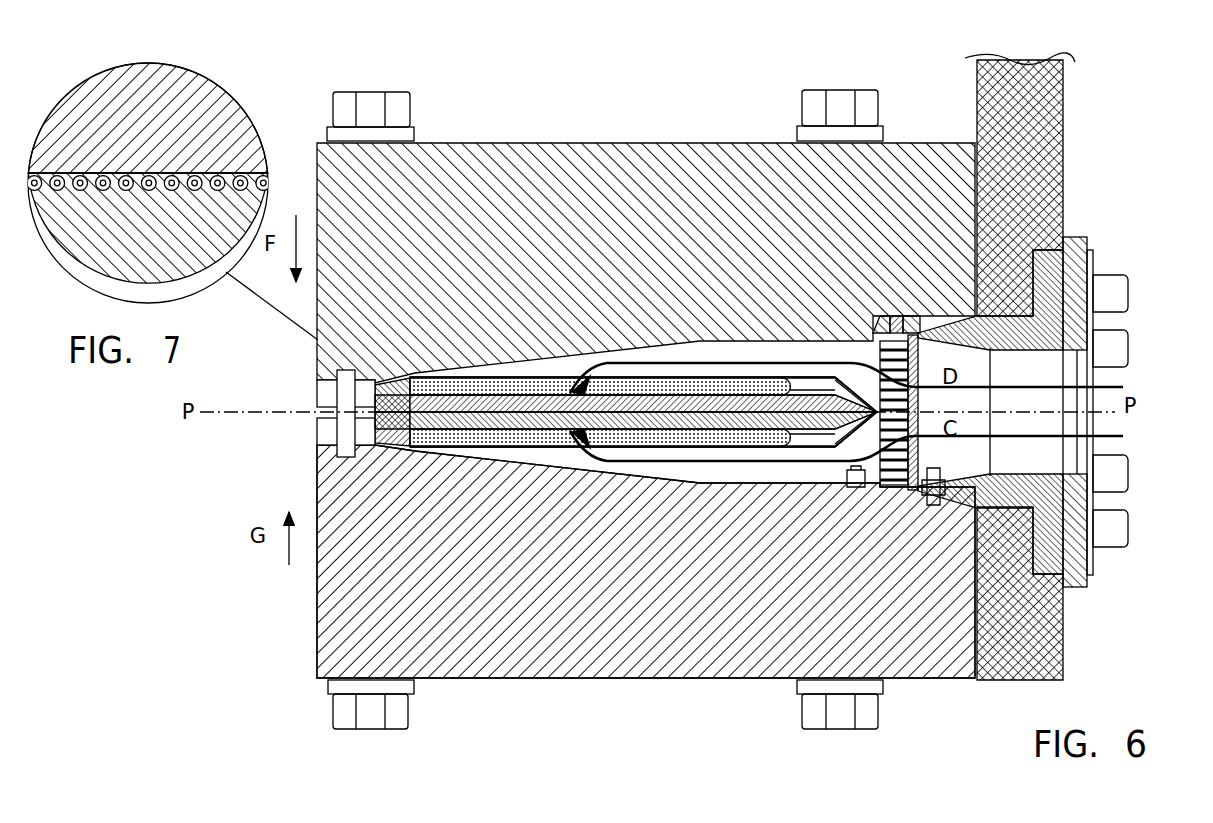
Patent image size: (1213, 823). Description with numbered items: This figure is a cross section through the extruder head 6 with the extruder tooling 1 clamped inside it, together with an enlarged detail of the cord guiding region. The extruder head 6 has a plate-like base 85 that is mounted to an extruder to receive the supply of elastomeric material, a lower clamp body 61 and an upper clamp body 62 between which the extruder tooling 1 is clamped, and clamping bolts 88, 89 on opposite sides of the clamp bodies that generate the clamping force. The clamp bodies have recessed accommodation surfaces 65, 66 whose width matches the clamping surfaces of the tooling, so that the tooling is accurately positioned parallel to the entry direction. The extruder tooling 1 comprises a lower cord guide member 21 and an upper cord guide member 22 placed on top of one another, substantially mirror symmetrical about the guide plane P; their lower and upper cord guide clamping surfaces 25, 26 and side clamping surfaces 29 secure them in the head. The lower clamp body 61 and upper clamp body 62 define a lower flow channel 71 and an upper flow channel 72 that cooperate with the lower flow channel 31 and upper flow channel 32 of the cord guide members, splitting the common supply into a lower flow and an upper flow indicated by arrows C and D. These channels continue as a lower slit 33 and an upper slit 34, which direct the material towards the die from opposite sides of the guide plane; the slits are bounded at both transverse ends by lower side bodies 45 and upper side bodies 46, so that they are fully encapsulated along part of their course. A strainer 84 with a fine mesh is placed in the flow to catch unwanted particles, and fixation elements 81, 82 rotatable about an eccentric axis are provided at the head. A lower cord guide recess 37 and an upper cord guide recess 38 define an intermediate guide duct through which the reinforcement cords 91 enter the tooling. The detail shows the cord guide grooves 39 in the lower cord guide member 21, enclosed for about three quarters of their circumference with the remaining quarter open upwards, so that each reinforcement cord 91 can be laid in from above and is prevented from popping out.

In FIG. 6, the extruder tooling 1 is at (757, 470).
In FIG. 6, the extruder head 6 is at (1097, 80).
In FIG. 7, the lower cord guide member 21 is at (212, 292).
In FIG. 6, the lower cord guide member 21 is at (383, 450).
In FIG. 7, the upper cord guide member 22 is at (222, 102).
In FIG. 6, the upper cord guide member 22 is at (370, 380).
In FIG. 6, the lower cord guide clamping surface 25 is at (600, 592).
In FIG. 6, the upper cord guide clamping surface 26 is at (600, 234).
In FIG. 6, the side clamping surface 29 is at (325, 450).
In FIG. 6, the lower flow channel 31 is at (817, 442).
In FIG. 6, the upper flow channel 32 is at (800, 382).
In FIG. 6, the lower slit 33 is at (518, 452).
In FIG. 6, the upper slit 34 is at (515, 380).
In FIG. 6, the lower cord guide recess 37 is at (456, 556).
In FIG. 6, the upper cord guide recess 38 is at (460, 458).
In FIG. 7, the cord guide grooves 39 is at (80, 190).
In FIG. 6, the lower side bodies 45 is at (836, 442).
In FIG. 6, the upper side bodies 46 is at (835, 382).
In FIG. 6, the lower clamp body 61 is at (686, 660).
In FIG. 6, the upper clamp body 62 is at (690, 150).
In FIG. 6, the recessed accommodation surface 65 is at (595, 452).
In FIG. 6, the recessed accommodation surface 66 is at (585, 388).
In FIG. 6, the lower flow channel 71 is at (652, 470).
In FIG. 6, the upper flow channel 72 is at (655, 362).
In FIG. 6, the fixation element 81 is at (330, 426).
In FIG. 6, the fixation element 82 is at (325, 392).
In FIG. 6, the strainer 84 is at (895, 492).
In FIG. 6, the plate-like base 85 is at (1055, 185).
In FIG. 6, the clamping bolts 88 is at (352, 712).
In FIG. 6, the clamping bolts 89 is at (362, 110).
In FIG. 7, the reinforcement cords 91 is at (103, 178).